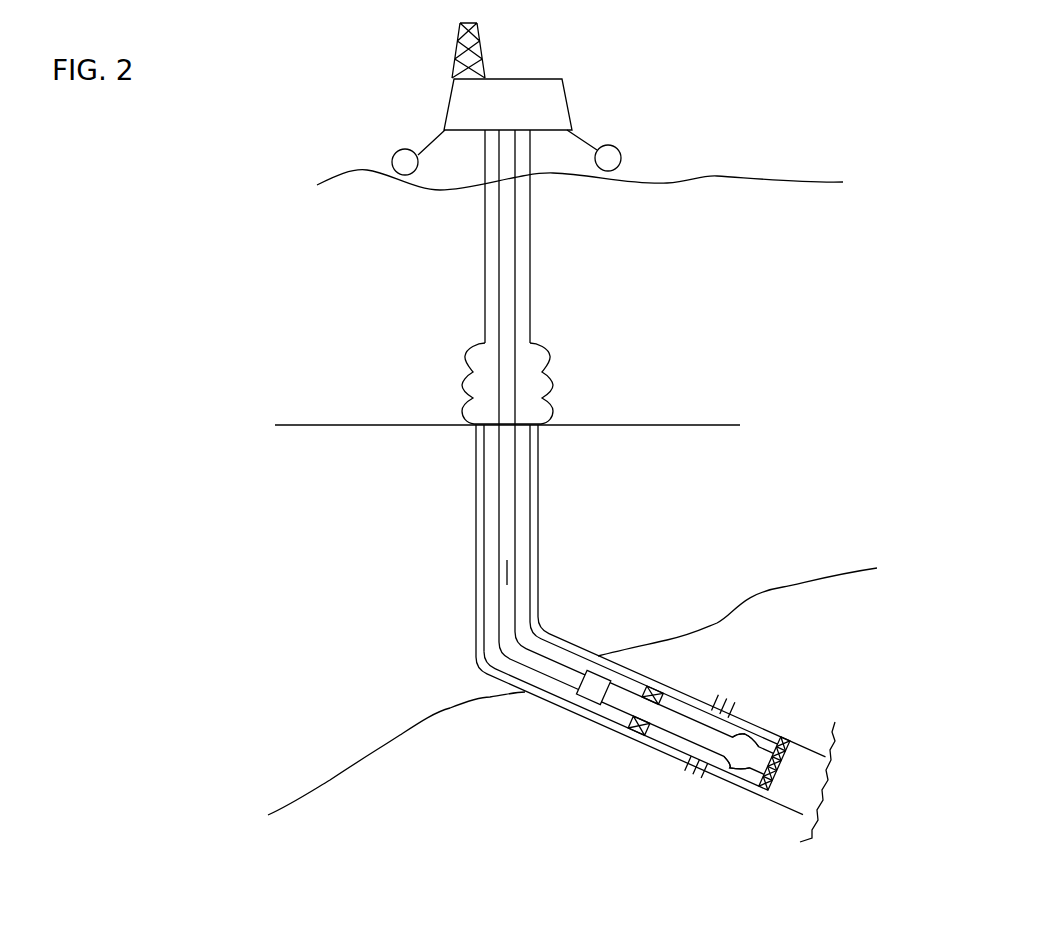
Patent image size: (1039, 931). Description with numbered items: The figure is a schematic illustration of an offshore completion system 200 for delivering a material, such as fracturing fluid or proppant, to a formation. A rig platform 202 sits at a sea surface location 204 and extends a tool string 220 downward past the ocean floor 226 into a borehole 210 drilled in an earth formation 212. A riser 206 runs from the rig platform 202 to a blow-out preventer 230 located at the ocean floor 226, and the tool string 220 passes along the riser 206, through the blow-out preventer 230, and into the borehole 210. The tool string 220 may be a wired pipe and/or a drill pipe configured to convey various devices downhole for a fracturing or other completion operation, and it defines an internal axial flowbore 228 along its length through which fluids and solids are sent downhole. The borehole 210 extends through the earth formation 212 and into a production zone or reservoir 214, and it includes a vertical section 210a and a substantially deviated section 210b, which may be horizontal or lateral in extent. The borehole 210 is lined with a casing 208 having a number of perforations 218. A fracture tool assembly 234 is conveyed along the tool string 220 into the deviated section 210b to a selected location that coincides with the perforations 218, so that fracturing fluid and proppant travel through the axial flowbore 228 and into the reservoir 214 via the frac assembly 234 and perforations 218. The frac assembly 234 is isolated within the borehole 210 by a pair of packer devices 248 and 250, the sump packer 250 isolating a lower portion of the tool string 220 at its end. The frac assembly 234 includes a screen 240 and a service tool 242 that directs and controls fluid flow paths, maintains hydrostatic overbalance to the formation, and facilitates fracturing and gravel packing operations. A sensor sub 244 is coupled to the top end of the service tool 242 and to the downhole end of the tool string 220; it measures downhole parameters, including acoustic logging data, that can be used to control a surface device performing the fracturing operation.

The completion system 200 is at (516, 525).
The rig platform 202 is at (534, 78).
The sea surface location 204 is at (758, 173).
The riser 206 is at (485, 238).
The casing 208 is at (476, 465).
The borehole 210 is at (540, 485).
The vertical section 210a is at (476, 605).
The deviated section 210b is at (548, 703).
The earth formation 212 is at (712, 526).
The reservoir 214 is at (440, 801).
The perforations 218 is at (722, 700).
The tool string 220 is at (530, 292).
The ocean floor 226 is at (698, 425).
The axial flowbore 228 is at (510, 573).
The blow-out preventer 230 is at (553, 363).
The fracture tool assembly 234 is at (677, 806).
The screen 240 is at (740, 735).
The service tool 242 is at (665, 700).
The sensor sub 244 is at (597, 678).
The packer device 248 is at (633, 738).
The sump packer 250 is at (765, 800).